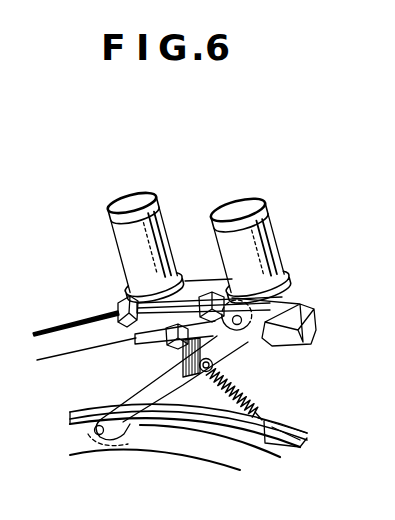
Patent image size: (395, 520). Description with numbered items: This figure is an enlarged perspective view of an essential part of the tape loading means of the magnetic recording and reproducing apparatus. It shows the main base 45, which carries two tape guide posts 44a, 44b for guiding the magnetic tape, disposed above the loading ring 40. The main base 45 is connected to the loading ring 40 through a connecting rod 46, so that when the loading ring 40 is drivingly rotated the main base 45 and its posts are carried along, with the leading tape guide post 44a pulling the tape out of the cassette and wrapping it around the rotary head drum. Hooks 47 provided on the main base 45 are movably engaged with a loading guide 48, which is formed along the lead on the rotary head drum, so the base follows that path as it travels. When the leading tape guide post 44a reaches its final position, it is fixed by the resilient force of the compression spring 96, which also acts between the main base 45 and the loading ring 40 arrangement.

The loading ring 40 is at (142, 438).
The tape guide post 44a is at (267, 237).
The tape guide post 44b is at (133, 243).
The main base 45 is at (312, 317).
The connecting rod 46 is at (216, 343).
The hooks 47 is at (206, 293).
The loading guide 48 is at (60, 342).
The compression spring 96 is at (258, 406).